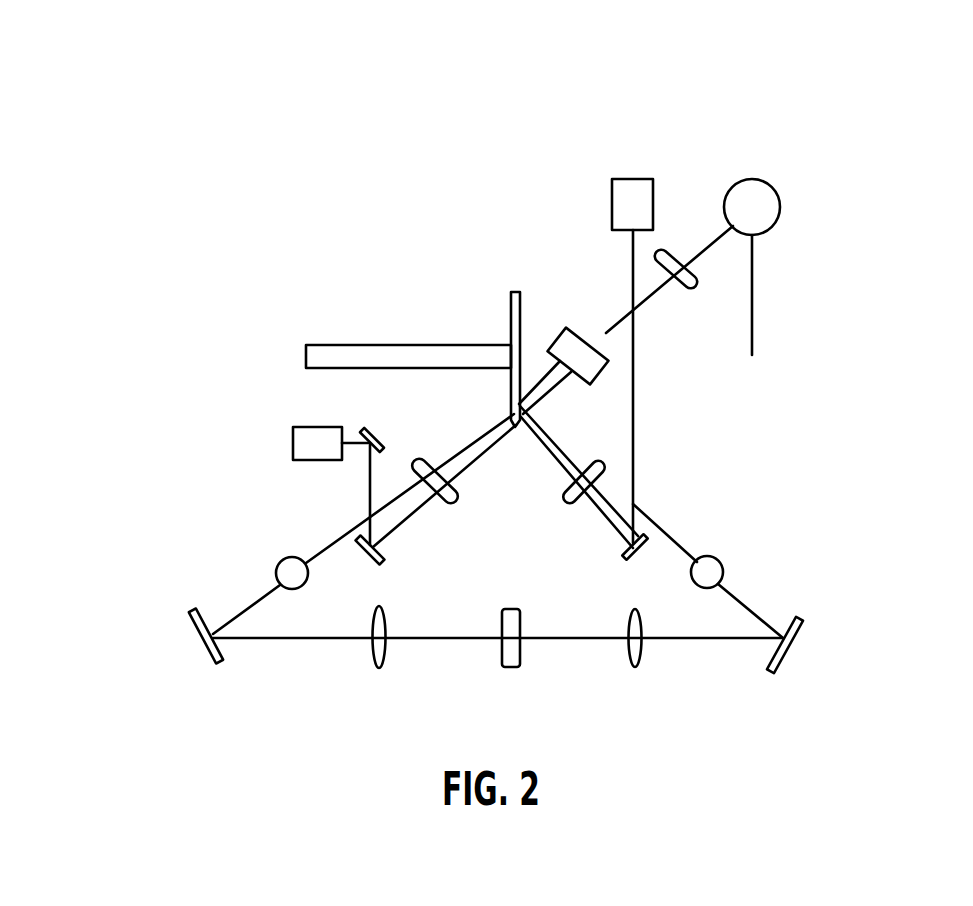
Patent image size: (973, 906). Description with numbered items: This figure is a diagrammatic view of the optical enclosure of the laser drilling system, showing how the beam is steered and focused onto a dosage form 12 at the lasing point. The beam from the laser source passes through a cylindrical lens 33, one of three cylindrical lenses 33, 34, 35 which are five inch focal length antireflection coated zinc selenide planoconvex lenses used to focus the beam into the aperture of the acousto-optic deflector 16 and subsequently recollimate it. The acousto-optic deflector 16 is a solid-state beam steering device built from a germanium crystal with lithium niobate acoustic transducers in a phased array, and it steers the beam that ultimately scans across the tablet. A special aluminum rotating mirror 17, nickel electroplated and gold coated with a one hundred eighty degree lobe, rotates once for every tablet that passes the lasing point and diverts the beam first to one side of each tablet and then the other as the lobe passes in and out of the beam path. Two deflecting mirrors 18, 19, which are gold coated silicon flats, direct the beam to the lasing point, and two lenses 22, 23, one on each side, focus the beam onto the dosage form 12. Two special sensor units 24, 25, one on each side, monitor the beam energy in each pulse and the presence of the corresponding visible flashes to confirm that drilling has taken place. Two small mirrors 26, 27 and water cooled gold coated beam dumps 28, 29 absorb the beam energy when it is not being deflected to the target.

The dosage form 12 is at (506, 668).
The acousto-optic deflector 16 is at (611, 357).
The rotating mirror 17 is at (500, 316).
The deflecting mirror 18 is at (808, 641).
The deflecting mirror 19 is at (190, 620).
The lens 22 is at (374, 668).
The lens 23 is at (630, 668).
The sensor unit 24 is at (728, 555).
The sensor unit 25 is at (273, 564).
The small mirror 26 is at (622, 553).
The small mirror 27 is at (358, 530).
The beam dump 28 is at (645, 168).
The beam dump 29 is at (287, 430).
The cylindrical lens 33 is at (698, 280).
The cylindrical lens 34 is at (607, 461).
The cylindrical lens 35 is at (420, 462).